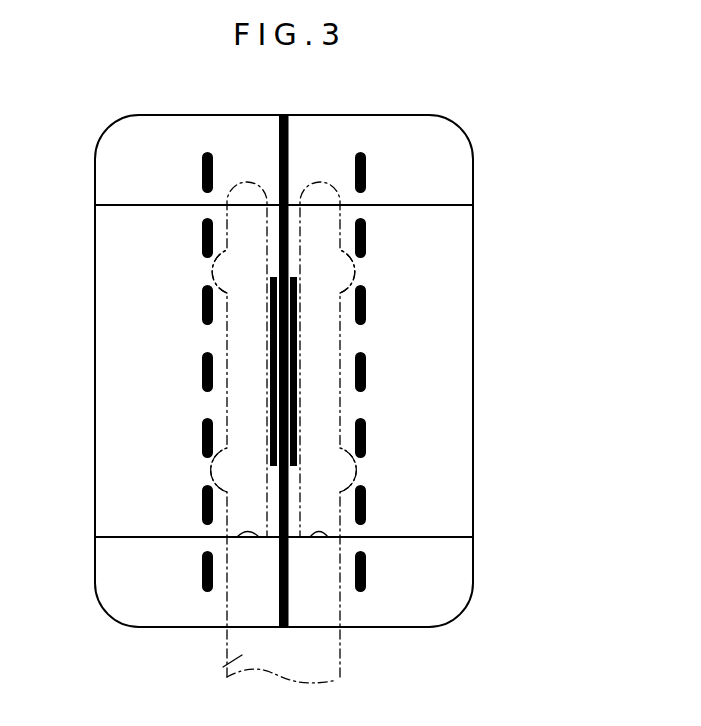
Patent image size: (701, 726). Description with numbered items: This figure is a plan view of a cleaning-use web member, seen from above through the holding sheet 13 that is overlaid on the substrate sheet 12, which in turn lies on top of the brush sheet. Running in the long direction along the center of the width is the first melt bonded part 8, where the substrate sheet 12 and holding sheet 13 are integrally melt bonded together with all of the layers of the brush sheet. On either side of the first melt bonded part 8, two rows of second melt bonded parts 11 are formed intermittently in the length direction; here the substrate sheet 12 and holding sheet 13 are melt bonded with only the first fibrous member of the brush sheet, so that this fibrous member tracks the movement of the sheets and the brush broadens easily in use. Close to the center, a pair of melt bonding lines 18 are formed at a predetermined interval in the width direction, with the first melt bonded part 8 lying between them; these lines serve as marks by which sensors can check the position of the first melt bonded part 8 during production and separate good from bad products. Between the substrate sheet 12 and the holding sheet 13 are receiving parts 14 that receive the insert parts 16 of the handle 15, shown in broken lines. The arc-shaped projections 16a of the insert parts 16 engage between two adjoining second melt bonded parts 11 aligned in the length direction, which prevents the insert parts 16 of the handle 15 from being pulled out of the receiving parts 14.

The first melt bonded part 8 is at (289, 150).
The second melt bonded parts 11 is at (203, 243).
The substrate sheet 12 is at (450, 185).
The holding sheet 13 is at (453, 520).
The receiving parts 14 is at (259, 537).
The handle 15 is at (225, 666).
The insert parts 16 is at (240, 390).
The arc-shaped projections 16a is at (355, 272).
The melt bonding lines 18 is at (270, 405).